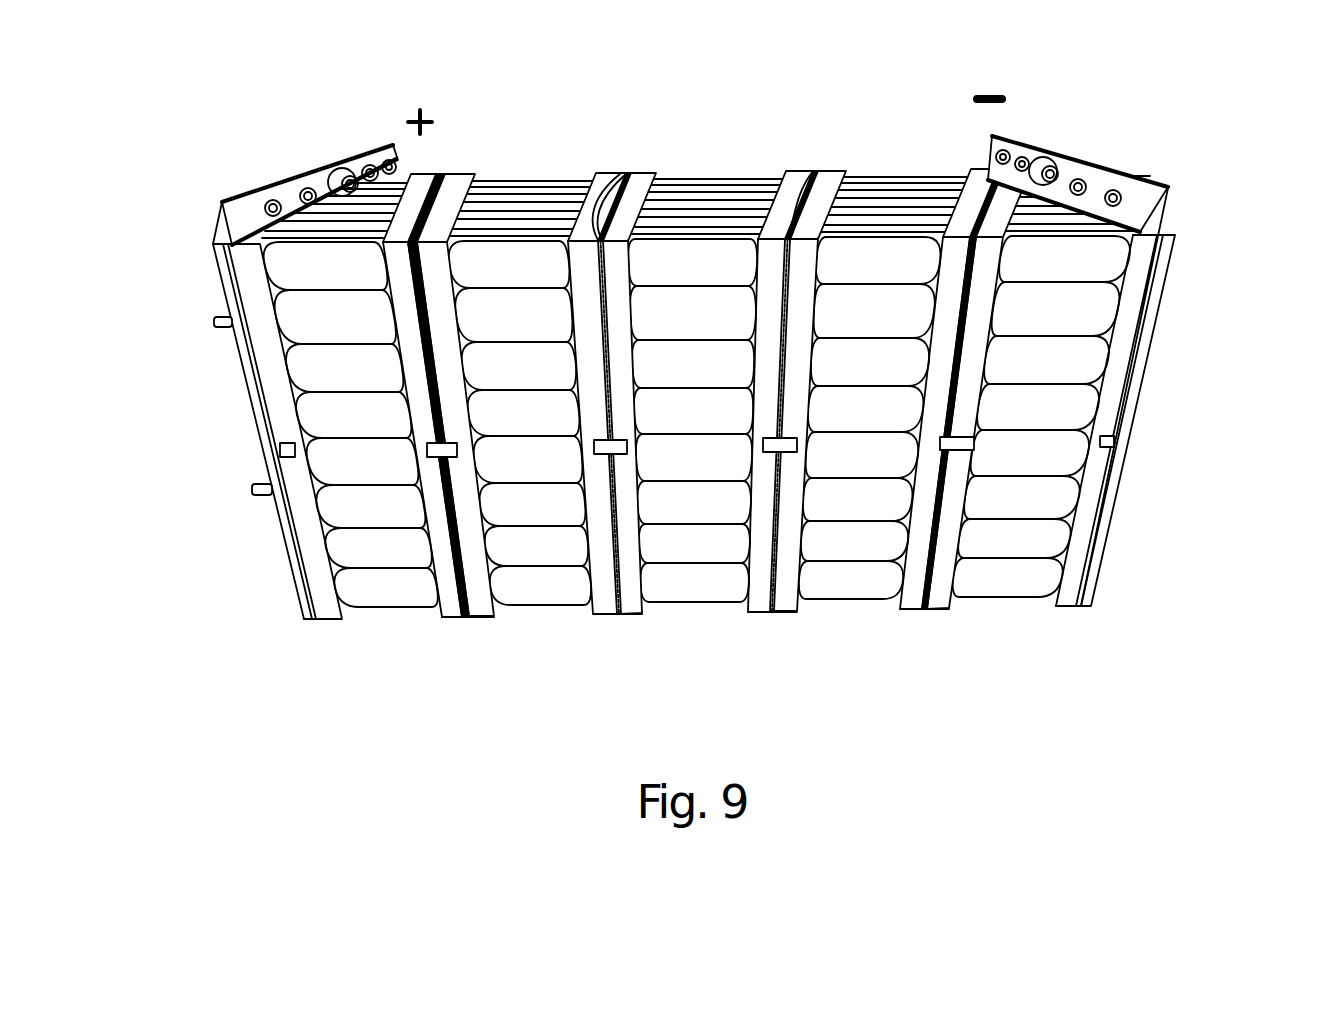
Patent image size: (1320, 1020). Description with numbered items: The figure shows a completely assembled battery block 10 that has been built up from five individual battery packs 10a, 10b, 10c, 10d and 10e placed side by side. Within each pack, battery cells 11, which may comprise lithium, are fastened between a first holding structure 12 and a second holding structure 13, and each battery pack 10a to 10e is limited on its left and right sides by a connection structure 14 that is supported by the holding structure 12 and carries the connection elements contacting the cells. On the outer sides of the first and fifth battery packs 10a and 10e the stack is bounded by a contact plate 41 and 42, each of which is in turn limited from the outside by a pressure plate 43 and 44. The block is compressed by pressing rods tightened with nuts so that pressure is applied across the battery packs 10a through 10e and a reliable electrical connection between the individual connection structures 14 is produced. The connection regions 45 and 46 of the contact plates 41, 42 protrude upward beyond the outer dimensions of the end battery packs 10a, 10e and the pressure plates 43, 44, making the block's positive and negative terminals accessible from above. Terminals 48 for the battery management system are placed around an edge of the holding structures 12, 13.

The battery block 10 is at (619, 68).
The battery pack 10a is at (402, 596).
The battery pack 10b is at (540, 596).
The battery pack 10c is at (702, 596).
The battery pack 10d is at (848, 595).
The battery pack 10e is at (1010, 589).
The battery cell 11 is at (1027, 245).
The first holding structure 12 is at (453, 618).
The second holding structure 13 is at (331, 620).
The connection structure 14 is at (600, 241).
The contact plate 41 is at (1168, 186).
The contact plate 42 is at (240, 192).
The pressure plate 43 is at (1156, 286).
The pressure plate 44 is at (245, 356).
The connection region 45 is at (1052, 172).
The connection region 46 is at (336, 172).
The terminal for the BMS 48 is at (1114, 442).